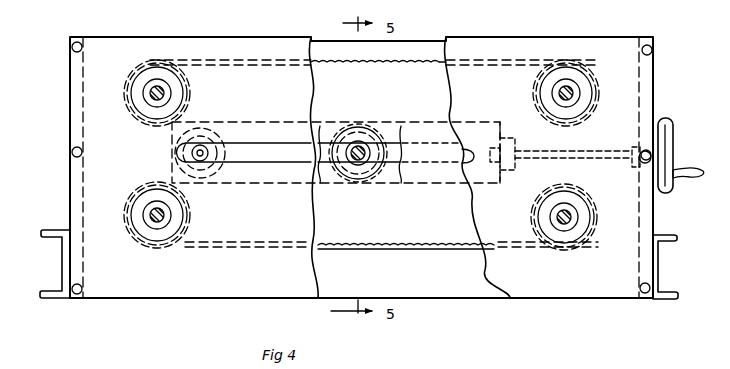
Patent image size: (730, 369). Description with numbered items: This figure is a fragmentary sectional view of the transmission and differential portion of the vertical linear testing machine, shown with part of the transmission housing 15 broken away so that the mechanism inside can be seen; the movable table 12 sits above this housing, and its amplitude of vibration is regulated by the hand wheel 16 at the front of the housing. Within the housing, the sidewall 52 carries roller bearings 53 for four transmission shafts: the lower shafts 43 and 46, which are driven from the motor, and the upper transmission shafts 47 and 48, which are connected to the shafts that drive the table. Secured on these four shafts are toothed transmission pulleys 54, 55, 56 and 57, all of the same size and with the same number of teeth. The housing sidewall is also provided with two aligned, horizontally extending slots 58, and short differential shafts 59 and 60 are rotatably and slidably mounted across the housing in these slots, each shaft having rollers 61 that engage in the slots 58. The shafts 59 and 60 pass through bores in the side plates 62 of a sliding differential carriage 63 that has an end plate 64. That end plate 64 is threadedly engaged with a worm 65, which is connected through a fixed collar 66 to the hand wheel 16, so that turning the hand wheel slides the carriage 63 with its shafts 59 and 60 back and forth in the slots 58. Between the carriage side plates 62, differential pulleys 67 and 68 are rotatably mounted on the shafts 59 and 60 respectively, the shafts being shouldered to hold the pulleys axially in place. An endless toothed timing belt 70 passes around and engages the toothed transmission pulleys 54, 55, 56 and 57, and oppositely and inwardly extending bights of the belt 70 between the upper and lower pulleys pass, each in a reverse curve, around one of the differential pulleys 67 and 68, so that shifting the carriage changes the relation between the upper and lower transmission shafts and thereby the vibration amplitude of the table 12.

The movable table 12 is at (677, 237).
The transmission housing 15 is at (60, 195).
The hand wheel 16 is at (673, 137).
The shaft 43 is at (566, 222).
The shaft 46 is at (152, 222).
The transmission shaft 47 is at (567, 92).
The transmission shaft 48 is at (157, 92).
The sidewall 52 is at (98, 110).
The roller bearings 53 is at (173, 90).
The toothed transmission pulley 54 is at (595, 213).
The toothed transmission pulley 55 is at (190, 233).
The toothed transmission pulley 56 is at (597, 96).
The toothed transmission pulley 57 is at (188, 104).
The slots 58 is at (456, 147).
The differential shaft 59 is at (356, 179).
The differential shaft 60 is at (193, 156).
The rollers 61 is at (222, 143).
The side plates 62 is at (318, 185).
The sliding differential carriage 63 is at (499, 121).
The end plate 64 is at (514, 171).
The worm 65 is at (594, 163).
The fixed collar 66 is at (634, 148).
The differential pulley 67 is at (369, 131).
The differential pulley 68 is at (173, 140).
The endless toothed timing belt 70 is at (346, 63).